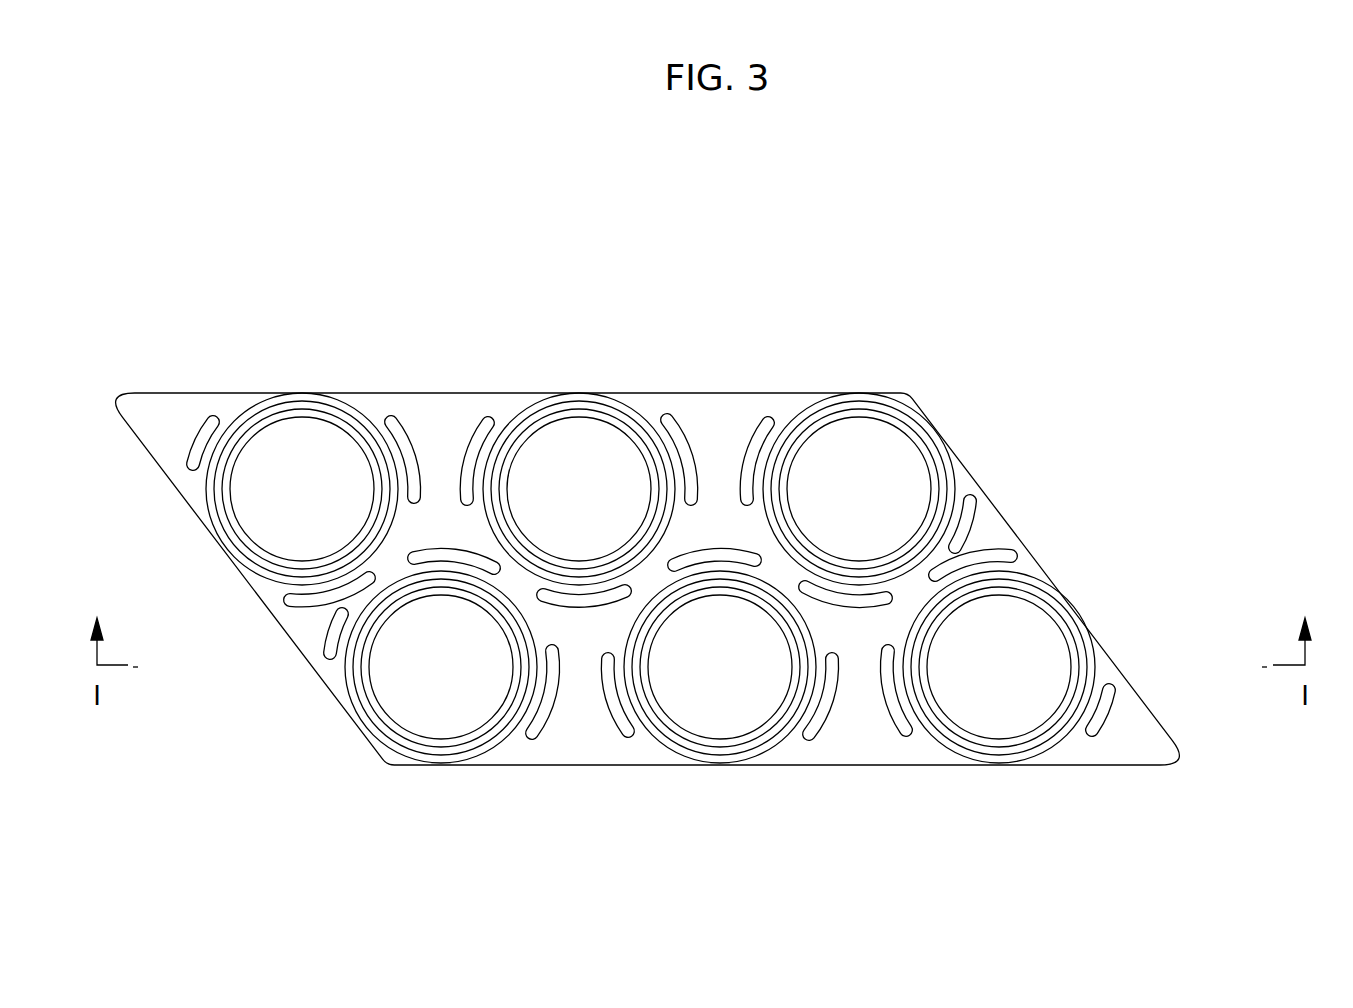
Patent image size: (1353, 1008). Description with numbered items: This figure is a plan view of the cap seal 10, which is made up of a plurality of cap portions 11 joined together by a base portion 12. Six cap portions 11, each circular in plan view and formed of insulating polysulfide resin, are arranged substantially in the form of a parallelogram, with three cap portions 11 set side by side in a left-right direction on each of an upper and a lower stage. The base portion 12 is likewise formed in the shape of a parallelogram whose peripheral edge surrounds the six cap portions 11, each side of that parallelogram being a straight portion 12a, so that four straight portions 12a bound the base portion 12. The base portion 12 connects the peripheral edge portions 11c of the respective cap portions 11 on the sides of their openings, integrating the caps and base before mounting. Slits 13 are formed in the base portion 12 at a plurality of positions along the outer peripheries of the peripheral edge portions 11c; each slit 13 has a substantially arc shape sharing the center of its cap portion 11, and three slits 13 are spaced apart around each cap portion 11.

The cap seal 10 is at (1021, 293).
The cap portion 11 is at (302, 418).
The peripheral edge portion 11c is at (631, 410).
The base portion 12 is at (650, 586).
The straight portion 12a is at (517, 393).
The slit 13 is at (443, 565).